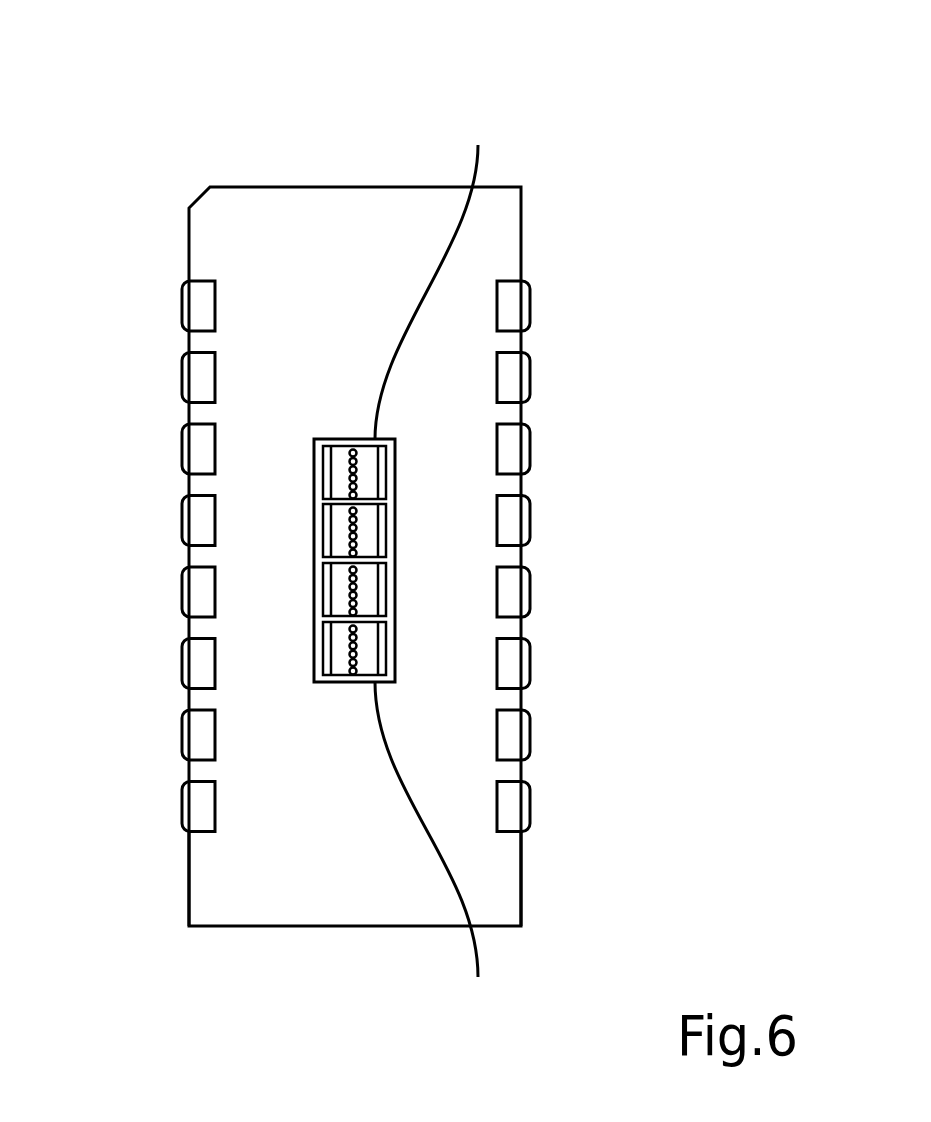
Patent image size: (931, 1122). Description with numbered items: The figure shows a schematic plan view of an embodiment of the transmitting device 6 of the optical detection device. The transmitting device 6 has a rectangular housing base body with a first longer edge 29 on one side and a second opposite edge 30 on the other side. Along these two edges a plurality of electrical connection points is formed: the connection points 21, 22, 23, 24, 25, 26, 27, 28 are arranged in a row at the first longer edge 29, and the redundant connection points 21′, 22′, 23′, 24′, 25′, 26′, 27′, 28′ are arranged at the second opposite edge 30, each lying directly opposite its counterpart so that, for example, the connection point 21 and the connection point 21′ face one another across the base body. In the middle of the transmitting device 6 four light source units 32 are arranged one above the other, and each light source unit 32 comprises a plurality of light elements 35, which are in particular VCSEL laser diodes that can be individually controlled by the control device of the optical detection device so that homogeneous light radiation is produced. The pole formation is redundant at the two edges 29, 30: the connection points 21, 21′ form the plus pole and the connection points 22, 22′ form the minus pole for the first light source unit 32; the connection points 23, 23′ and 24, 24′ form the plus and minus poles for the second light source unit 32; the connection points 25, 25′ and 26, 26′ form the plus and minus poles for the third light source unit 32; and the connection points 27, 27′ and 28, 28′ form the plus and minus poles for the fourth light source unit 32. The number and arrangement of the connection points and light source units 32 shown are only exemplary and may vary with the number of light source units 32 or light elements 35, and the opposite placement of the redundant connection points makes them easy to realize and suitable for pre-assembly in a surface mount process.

The transmitting device 6 is at (254, 102).
The electrical connection point 21 is at (520, 304).
The electrical connection point 22 is at (520, 376).
The electrical connection point 23 is at (520, 447).
The electrical connection point 24 is at (520, 518).
The electrical connection point 25 is at (520, 590).
The electrical connection point 26 is at (520, 662).
The electrical connection point 27 is at (520, 733).
The electrical connection point 28 is at (520, 804).
The electrical connection point 21′ is at (192, 304).
The electrical connection point 22′ is at (192, 376).
The electrical connection point 23′ is at (192, 447).
The electrical connection point 24′ is at (192, 518).
The electrical connection point 25′ is at (192, 590).
The electrical connection point 26′ is at (192, 662).
The electrical connection point 27′ is at (192, 733).
The electrical connection point 28′ is at (192, 804).
The first longer edge 29 is at (521, 905).
The second opposite edge 30 is at (189, 905).
The light source unit 32 is at (445, 653).
The light element 35 is at (342, 473).